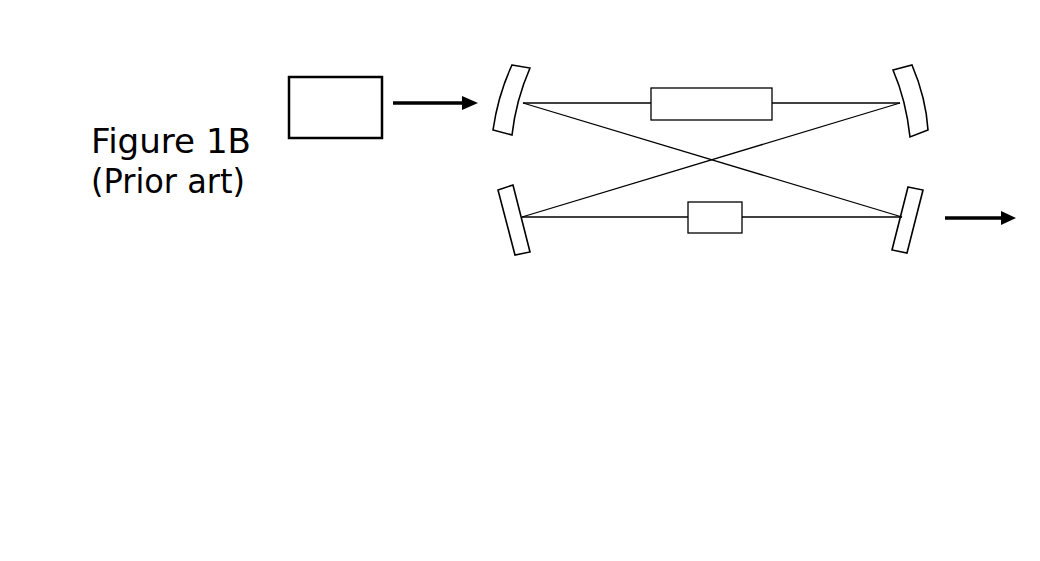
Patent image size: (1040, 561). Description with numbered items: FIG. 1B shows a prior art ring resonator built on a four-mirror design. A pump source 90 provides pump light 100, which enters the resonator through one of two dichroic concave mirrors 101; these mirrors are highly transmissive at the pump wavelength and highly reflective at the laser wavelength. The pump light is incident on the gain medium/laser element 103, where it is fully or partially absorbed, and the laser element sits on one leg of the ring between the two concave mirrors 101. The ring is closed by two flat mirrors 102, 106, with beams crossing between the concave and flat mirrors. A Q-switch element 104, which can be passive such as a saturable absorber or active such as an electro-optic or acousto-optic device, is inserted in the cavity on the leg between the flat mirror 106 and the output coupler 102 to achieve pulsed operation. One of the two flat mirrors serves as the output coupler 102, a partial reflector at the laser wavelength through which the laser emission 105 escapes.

The pump source 90 is at (333, 75).
The pump light 100 is at (440, 103).
The dichroic concave mirror 101 is at (510, 73).
The output coupler 102 is at (907, 242).
The gain medium/laser element 103 is at (732, 92).
The Q-switch element 104 is at (700, 235).
The laser emission 105 is at (962, 218).
The flat mirror 106 is at (512, 220).